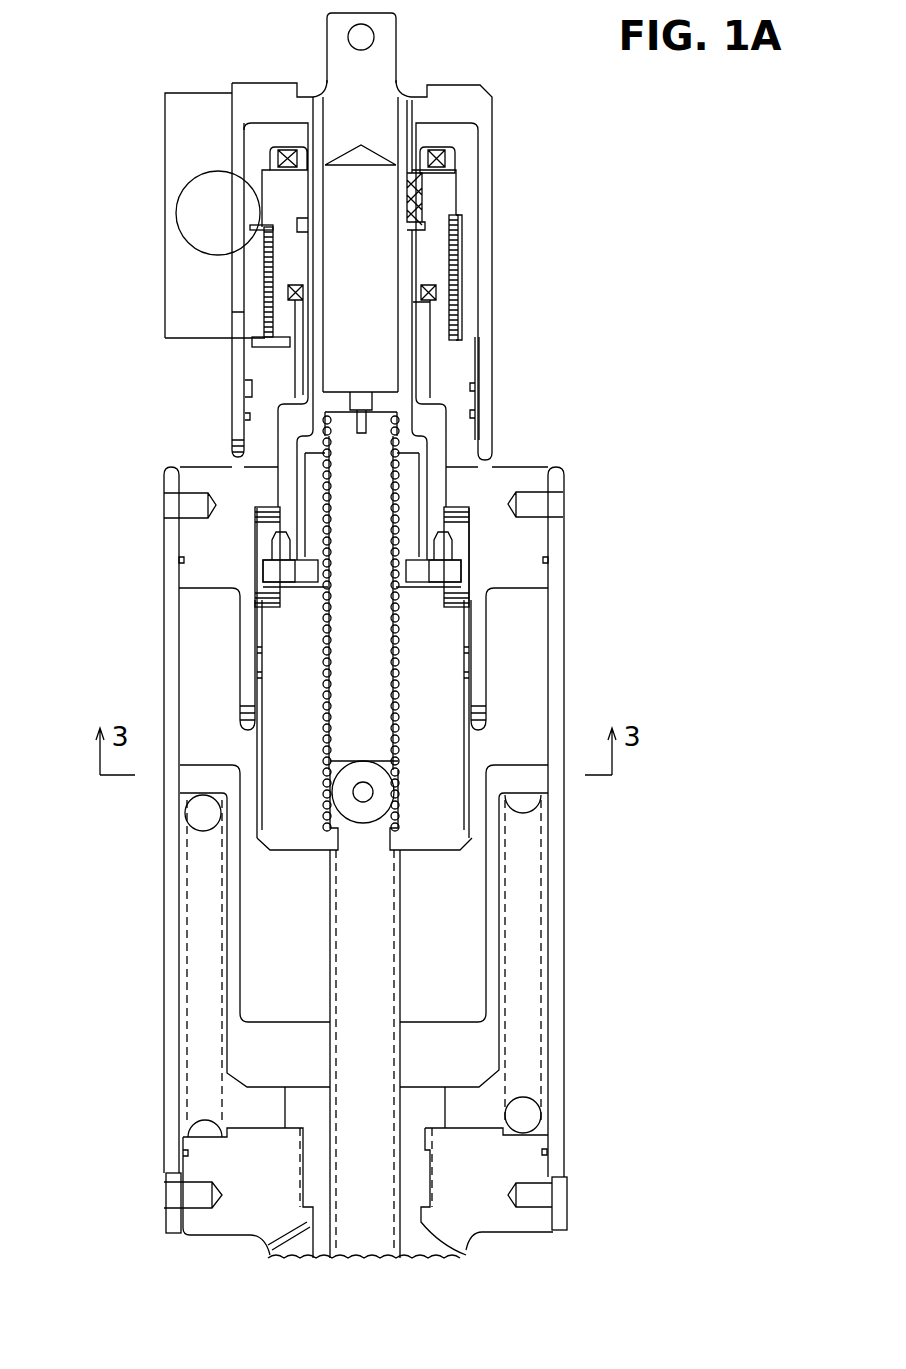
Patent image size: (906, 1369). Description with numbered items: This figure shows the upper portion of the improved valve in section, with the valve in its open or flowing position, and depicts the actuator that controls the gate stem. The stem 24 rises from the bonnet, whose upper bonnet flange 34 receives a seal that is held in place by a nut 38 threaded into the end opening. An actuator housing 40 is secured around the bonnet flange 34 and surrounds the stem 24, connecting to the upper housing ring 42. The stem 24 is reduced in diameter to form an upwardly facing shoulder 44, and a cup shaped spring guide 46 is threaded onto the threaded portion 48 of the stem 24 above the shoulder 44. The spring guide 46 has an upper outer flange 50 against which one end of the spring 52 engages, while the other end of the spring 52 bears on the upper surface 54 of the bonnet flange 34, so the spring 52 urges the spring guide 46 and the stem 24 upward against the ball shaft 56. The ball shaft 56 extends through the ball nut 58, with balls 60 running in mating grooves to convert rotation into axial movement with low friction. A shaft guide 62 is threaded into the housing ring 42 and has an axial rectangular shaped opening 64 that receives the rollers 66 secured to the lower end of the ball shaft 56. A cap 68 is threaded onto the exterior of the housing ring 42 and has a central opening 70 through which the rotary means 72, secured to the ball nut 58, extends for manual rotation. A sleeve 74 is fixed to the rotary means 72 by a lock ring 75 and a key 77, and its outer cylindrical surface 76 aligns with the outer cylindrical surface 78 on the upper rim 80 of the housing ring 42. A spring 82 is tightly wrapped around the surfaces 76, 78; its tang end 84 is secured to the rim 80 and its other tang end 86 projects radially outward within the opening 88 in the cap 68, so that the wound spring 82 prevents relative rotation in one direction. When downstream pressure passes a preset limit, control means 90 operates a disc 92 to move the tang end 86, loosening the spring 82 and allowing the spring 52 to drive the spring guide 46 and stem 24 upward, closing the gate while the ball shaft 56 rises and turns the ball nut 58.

The rotary means 72 is at (398, 77).
The central opening 70 is at (405, 92).
The opening in cap 88 is at (232, 143).
The control means 90 is at (165, 150).
The tang end 86 is at (188, 205).
The disc 92 is at (250, 228).
The spring 82 is at (265, 270).
The tang end 84 is at (263, 350).
The lock ring 75 is at (420, 150).
The key 77 is at (424, 185).
The sleeve 74 is at (450, 195).
The cap 68 is at (492, 228).
The outer cylindrical surface 76 is at (457, 250).
The outer cylindrical surface 78 is at (455, 305).
The upper rim 80 is at (447, 325).
The ball nut 58 is at (472, 490).
The balls 60 is at (328, 485).
The upper housing ring 42 is at (533, 538).
The ball shaft 56 is at (397, 680).
The axial rectangular shaped opening 64 is at (347, 752).
The rollers 66 is at (395, 775).
The shaft guide 62 is at (483, 775).
The upper outer flange 50 is at (190, 780).
The spring guide 46 is at (248, 915).
The threaded portion 48 is at (400, 925).
The stem 24 is at (400, 950).
The actuator housing 40 is at (567, 1023).
The shoulder 44 is at (402, 1083).
The spring 52 is at (200, 1115).
The upper surface 54 is at (207, 1130).
The upper bonnet flange 34 is at (543, 1217).
The nut 38 is at (410, 1240).